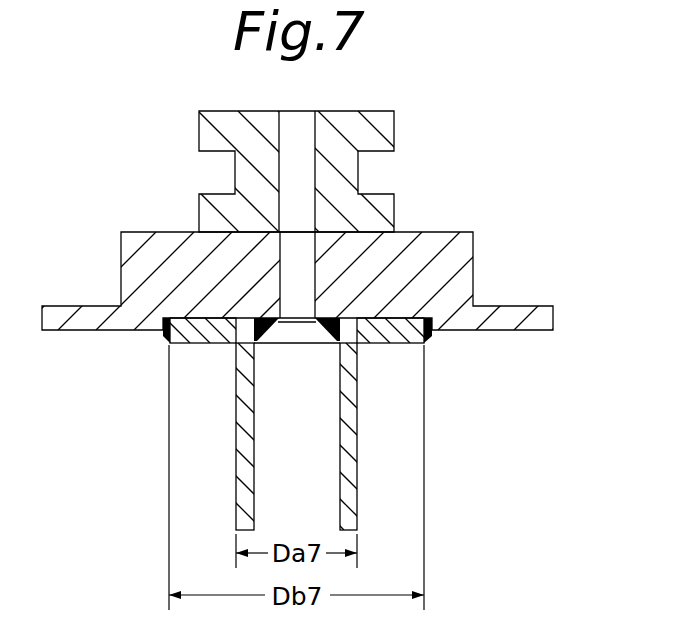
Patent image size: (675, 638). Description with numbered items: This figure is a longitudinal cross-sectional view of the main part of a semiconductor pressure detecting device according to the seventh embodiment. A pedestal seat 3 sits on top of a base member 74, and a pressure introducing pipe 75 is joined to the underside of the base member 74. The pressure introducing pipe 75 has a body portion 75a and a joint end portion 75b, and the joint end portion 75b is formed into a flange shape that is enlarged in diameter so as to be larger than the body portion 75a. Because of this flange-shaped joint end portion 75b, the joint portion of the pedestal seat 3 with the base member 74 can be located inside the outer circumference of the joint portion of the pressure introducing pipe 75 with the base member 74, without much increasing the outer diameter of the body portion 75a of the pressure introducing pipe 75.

The pedestal seat 3 is at (400, 125).
The base member 74 is at (446, 229).
The pressure introducing pipe 75 is at (291, 424).
The body portion 75a is at (236, 433).
The joint end portion 75b is at (197, 343).